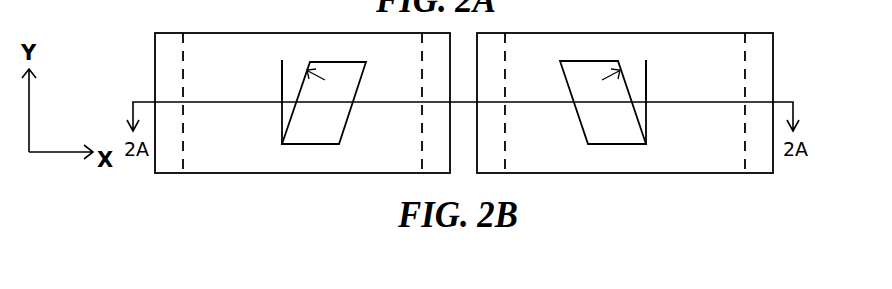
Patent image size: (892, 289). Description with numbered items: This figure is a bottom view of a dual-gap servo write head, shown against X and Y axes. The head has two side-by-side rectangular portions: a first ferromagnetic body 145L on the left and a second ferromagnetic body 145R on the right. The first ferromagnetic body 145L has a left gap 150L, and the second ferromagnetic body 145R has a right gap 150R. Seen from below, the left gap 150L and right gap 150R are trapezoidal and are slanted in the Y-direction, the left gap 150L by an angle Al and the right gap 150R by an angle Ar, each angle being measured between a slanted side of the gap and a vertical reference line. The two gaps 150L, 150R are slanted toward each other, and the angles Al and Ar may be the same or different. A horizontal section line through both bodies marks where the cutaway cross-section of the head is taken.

The first ferromagnetic body 145L is at (257, 161).
The second ferromagnetic body 145R is at (719, 159).
The left gap 150L is at (340, 138).
The right gap 150R is at (635, 138).
The angle Al is at (272, 71).
The angle Ar is at (656, 71).